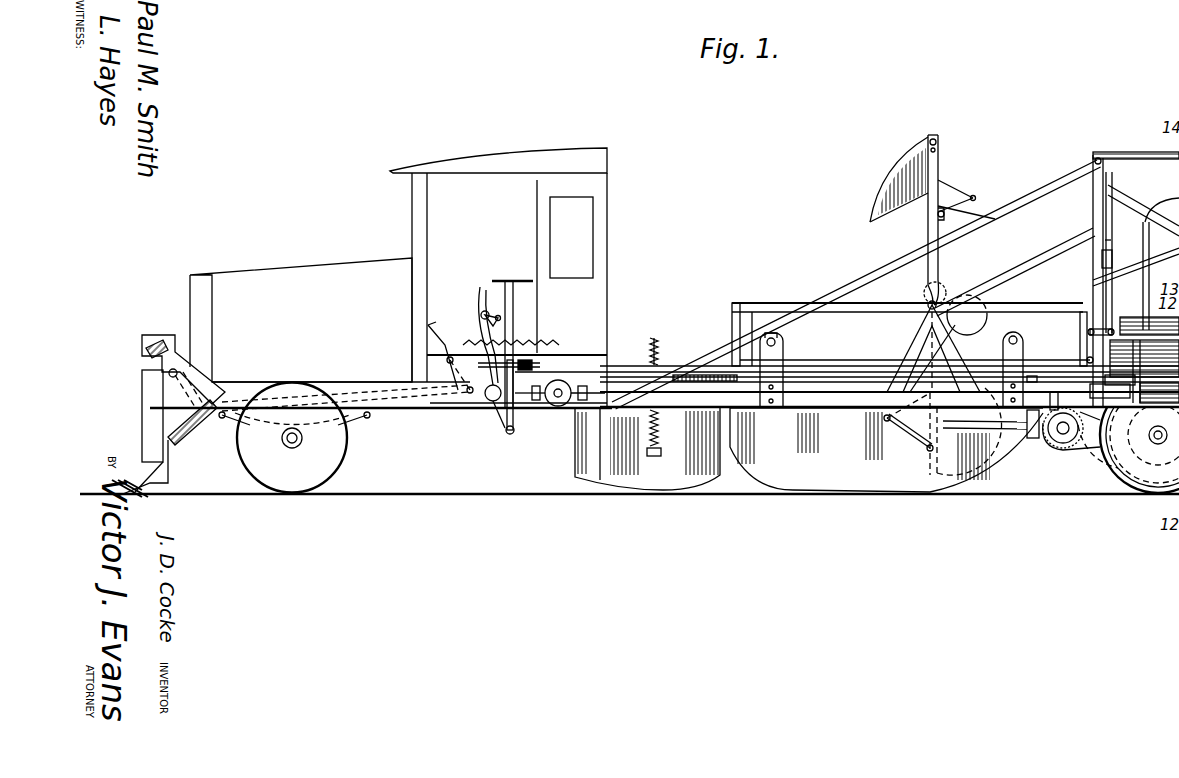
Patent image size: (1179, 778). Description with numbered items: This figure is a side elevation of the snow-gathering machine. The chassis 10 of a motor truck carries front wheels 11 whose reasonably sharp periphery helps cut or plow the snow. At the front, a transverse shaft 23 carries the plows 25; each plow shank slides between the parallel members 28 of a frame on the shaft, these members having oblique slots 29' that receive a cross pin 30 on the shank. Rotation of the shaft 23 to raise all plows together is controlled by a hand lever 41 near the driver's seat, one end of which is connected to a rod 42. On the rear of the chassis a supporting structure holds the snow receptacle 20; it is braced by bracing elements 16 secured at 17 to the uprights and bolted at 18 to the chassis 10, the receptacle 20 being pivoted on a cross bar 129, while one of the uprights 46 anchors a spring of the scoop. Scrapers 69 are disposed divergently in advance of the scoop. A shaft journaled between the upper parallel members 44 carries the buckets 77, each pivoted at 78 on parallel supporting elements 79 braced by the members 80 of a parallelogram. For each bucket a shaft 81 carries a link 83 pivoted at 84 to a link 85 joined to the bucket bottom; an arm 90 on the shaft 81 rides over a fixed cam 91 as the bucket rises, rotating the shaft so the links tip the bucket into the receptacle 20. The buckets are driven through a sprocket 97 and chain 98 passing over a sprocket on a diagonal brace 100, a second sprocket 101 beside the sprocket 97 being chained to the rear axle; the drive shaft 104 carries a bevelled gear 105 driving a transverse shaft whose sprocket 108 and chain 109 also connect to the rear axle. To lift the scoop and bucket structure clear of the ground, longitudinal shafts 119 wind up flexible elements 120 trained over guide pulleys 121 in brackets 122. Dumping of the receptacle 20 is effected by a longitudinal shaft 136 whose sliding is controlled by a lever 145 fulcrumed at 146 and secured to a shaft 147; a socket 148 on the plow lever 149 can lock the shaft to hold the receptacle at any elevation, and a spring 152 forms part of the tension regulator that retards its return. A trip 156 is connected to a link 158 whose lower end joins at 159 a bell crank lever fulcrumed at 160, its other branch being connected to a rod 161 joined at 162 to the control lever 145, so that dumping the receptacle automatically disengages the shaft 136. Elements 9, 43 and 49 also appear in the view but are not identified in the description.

The rear bracket 9 is at (1101, 377).
The chassis 10 is at (800, 410).
The front wheels 11 is at (252, 465).
The bracing elements 16 is at (836, 292).
The securing point 17 is at (1093, 155).
The bolted connection 18 is at (640, 412).
The receptacle 20 is at (1138, 369).
The transversely disposed shaft 23 is at (170, 398).
The plows 25 is at (133, 477).
The parallel members 28 is at (166, 340).
The obliquely disposed slots 29' is at (130, 341).
The cross pin 30 is at (169, 373).
The hand lever 41 is at (427, 333).
The rod 42 is at (405, 400).
The blade lifting rod 43 is at (205, 376).
The upper parallel members 44 is at (765, 285).
The uprights 46 is at (735, 318).
The rear bracket bolt 49 is at (1033, 376).
The scrapers 69 is at (690, 494).
The buckets 77 is at (908, 160).
The bucket pivot 78 is at (938, 142).
The supporting elements 79 is at (940, 162).
The parallelogram members 80 is at (965, 296).
The shaft 81 is at (924, 222).
The link 83 is at (950, 186).
The pivot 84 is at (966, 197).
The link 85 is at (992, 222).
The arm 90 is at (938, 274).
The fixed cam 91 is at (960, 310).
The sprocket 97 is at (922, 296).
The chain 98 is at (1052, 246).
The diagonally disposed brace 100 is at (1120, 203).
The second sprocket 101 is at (1150, 263).
The drive shaft 104 is at (1000, 430).
The bevelled gear 105 is at (1145, 456).
The sprocket 108 is at (1058, 448).
The chain 109 is at (1097, 458).
The parallel shafts 119 is at (707, 373).
The flexible element 120 is at (786, 372).
The guide pulley 121 is at (776, 337).
The bracket 122 is at (782, 352).
The cross bar 129 is at (1149, 325).
The shaft 136 is at (870, 412).
The lever 145 is at (500, 318).
The fulcrum 146 is at (514, 430).
The shaft 147 is at (497, 425).
The socket 148 is at (486, 400).
The plow lever 149 is at (480, 330).
The spring 152 is at (1134, 392).
The trip 156 is at (1105, 186).
The link 158 is at (1104, 259).
The connection 159 is at (1110, 329).
The fulcrum 160 is at (1085, 300).
The rod 161 is at (870, 354).
The connection 162 is at (526, 360).